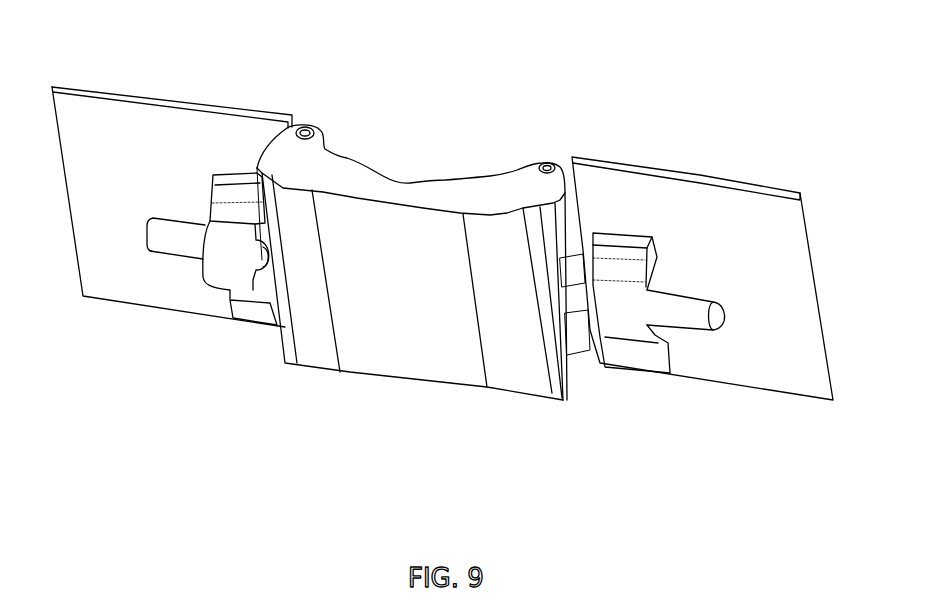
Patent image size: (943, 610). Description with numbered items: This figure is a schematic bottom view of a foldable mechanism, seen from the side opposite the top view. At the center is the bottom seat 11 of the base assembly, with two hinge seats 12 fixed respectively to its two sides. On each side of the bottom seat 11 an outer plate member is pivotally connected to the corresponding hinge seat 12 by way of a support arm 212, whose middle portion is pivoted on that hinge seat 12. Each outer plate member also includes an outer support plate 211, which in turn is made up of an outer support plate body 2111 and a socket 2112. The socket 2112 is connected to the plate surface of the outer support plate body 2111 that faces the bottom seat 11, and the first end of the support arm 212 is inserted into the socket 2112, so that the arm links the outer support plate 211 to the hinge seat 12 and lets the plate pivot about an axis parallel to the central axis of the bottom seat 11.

The bottom seat 11 is at (405, 190).
The hinge seat 12 is at (316, 125).
The outer support plate 211 is at (187, 403).
The outer support plate body 2111 is at (158, 287).
The socket 2112 is at (237, 303).
The support arm 212 is at (182, 238).